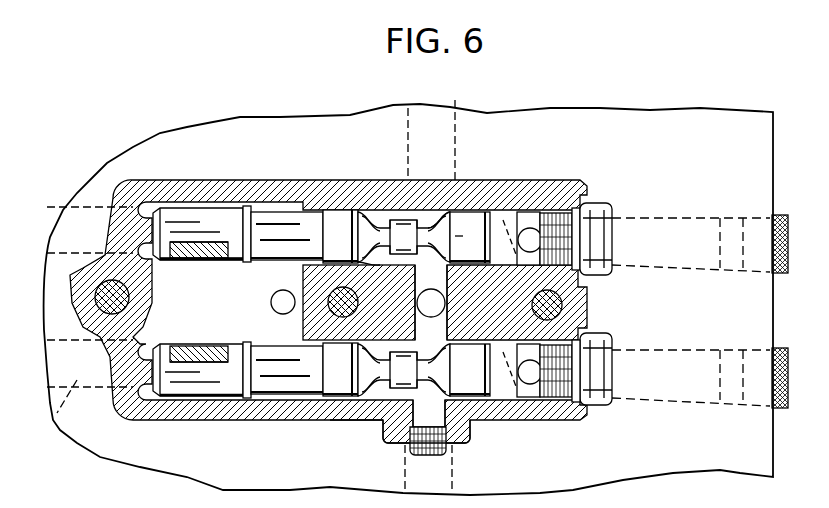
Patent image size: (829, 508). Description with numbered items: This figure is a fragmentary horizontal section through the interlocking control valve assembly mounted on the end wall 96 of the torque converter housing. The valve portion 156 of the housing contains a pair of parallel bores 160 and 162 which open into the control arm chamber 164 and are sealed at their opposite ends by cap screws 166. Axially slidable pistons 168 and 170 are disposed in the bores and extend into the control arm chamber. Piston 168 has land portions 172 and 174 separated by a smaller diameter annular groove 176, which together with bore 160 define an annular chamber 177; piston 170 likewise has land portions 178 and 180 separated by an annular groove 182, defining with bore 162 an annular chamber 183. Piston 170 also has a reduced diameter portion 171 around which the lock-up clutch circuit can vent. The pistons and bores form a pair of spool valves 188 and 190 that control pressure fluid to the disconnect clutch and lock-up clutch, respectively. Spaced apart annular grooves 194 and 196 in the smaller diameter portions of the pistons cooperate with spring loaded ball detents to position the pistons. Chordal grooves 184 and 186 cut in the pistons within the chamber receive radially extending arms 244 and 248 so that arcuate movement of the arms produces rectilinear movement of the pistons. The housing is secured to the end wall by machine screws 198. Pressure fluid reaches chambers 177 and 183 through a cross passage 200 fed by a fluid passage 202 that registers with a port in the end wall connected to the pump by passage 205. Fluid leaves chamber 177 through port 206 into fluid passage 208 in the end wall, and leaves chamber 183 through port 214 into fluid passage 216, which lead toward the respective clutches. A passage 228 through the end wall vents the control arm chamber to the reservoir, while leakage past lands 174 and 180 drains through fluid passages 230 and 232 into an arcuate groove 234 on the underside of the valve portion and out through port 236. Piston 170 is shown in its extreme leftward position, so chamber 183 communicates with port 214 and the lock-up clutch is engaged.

The end wall 96 is at (95, 438).
The valve portion 156 is at (490, 212).
The bore 160 is at (505, 400).
The bore 162 is at (470, 238).
The control arm chamber 164 is at (225, 415).
The cap screws 166 is at (601, 240).
The piston 168 is at (483, 405).
The piston 170 is at (473, 202).
The reduced diameter portion 171 is at (262, 215).
The land portion 172 is at (316, 405).
The land portion 174 is at (456, 430).
The annular groove 176 is at (402, 395).
The annular chamber 177 is at (367, 343).
The land portion 178 is at (282, 215).
The land portion 180 is at (497, 210).
The annular groove 182 is at (400, 222).
The annular chamber 183 is at (430, 213).
The chordal groove 184 is at (180, 345).
The chordal groove 186 is at (178, 260).
The spool valve 188 is at (375, 430).
The spool valve 190 is at (333, 225).
The annular grooves 194 is at (396, 340).
The annular grooves 196 is at (360, 258).
The machine screws 198 is at (95, 290).
The cross passage 200 is at (417, 300).
The fluid passage 202 is at (431, 303).
The passage 205 is at (460, 103).
The port 206 is at (346, 420).
The fluid passage 208 is at (55, 411).
The port 214 is at (343, 200).
The fluid passage 216 is at (80, 212).
The passage 228 is at (271, 302).
The fluid passage 230 is at (545, 420).
The fluid passage 232 is at (525, 230).
The arcuate groove 234 is at (585, 320).
The port 236 is at (527, 295).
The radially extending arm 244 is at (207, 345).
The radially extending arm 248 is at (213, 262).